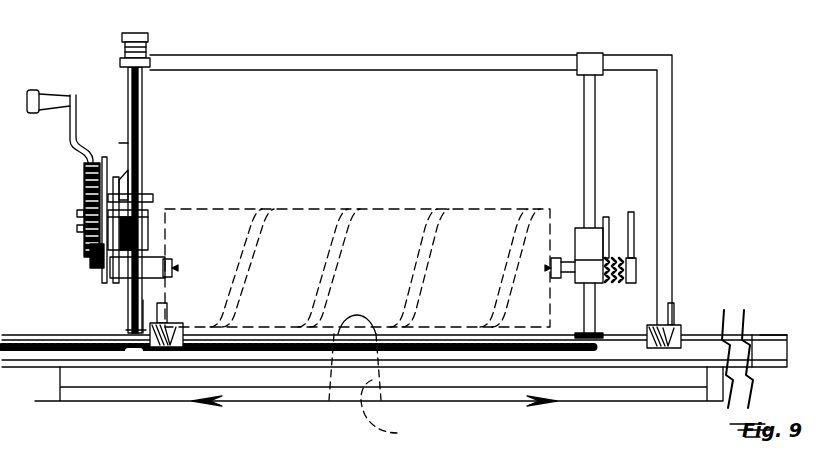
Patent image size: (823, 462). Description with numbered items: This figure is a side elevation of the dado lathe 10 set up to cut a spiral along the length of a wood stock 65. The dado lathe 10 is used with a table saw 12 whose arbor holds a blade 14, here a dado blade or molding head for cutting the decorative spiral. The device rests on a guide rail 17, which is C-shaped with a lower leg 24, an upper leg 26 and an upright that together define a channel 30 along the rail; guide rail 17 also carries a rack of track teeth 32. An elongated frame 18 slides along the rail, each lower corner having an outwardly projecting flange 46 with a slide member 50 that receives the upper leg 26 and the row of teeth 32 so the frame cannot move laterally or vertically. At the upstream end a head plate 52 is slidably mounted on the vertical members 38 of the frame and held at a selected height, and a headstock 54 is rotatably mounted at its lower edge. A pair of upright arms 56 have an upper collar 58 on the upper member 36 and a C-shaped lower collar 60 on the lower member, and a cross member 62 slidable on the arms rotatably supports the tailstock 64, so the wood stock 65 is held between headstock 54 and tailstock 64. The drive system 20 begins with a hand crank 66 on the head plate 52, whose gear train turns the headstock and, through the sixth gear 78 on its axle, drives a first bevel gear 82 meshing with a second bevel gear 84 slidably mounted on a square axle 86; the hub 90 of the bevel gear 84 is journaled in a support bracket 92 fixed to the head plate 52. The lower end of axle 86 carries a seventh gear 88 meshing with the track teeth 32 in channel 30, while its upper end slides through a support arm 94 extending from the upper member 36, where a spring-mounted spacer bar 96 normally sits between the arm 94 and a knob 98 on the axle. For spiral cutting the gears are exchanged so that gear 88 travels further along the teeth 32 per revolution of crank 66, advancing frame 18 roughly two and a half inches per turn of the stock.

The dado lathe 10 is at (360, 40).
The table saw 12 is at (373, 400).
The blade 14 is at (386, 436).
The guide rail 17 is at (759, 334).
The frame 18 is at (368, 55).
The drive system 20 is at (78, 186).
The lower leg 24 is at (752, 367).
The upper leg 26 is at (749, 334).
The channel 30 is at (66, 358).
The track teeth 32 is at (88, 343).
The upper member 36 is at (413, 60).
The vertical member 38 is at (130, 134).
The flange 46 is at (163, 304).
The slide member 50 is at (175, 322).
The head plate 52 is at (102, 158).
The headstock 54 is at (158, 258).
The upright arm 56 is at (591, 128).
The upper collar 58 is at (591, 78).
The lower collar 60 is at (592, 333).
The cross member 62 is at (587, 230).
The tailstock 64 is at (564, 258).
The wood stock 65 is at (278, 207).
The hand crank 66 is at (72, 146).
The sixth gear 78 is at (83, 238).
The first bevel gear 82 is at (88, 260).
The second bevel gear 84 is at (153, 214).
The square axle 86 is at (142, 143).
The seventh gear 88 is at (133, 352).
The hub 90 is at (138, 197).
The support bracket 92 is at (137, 174).
The support arm 94 is at (121, 62).
The spacer bar 96 is at (126, 52).
The knob 98 is at (133, 34).